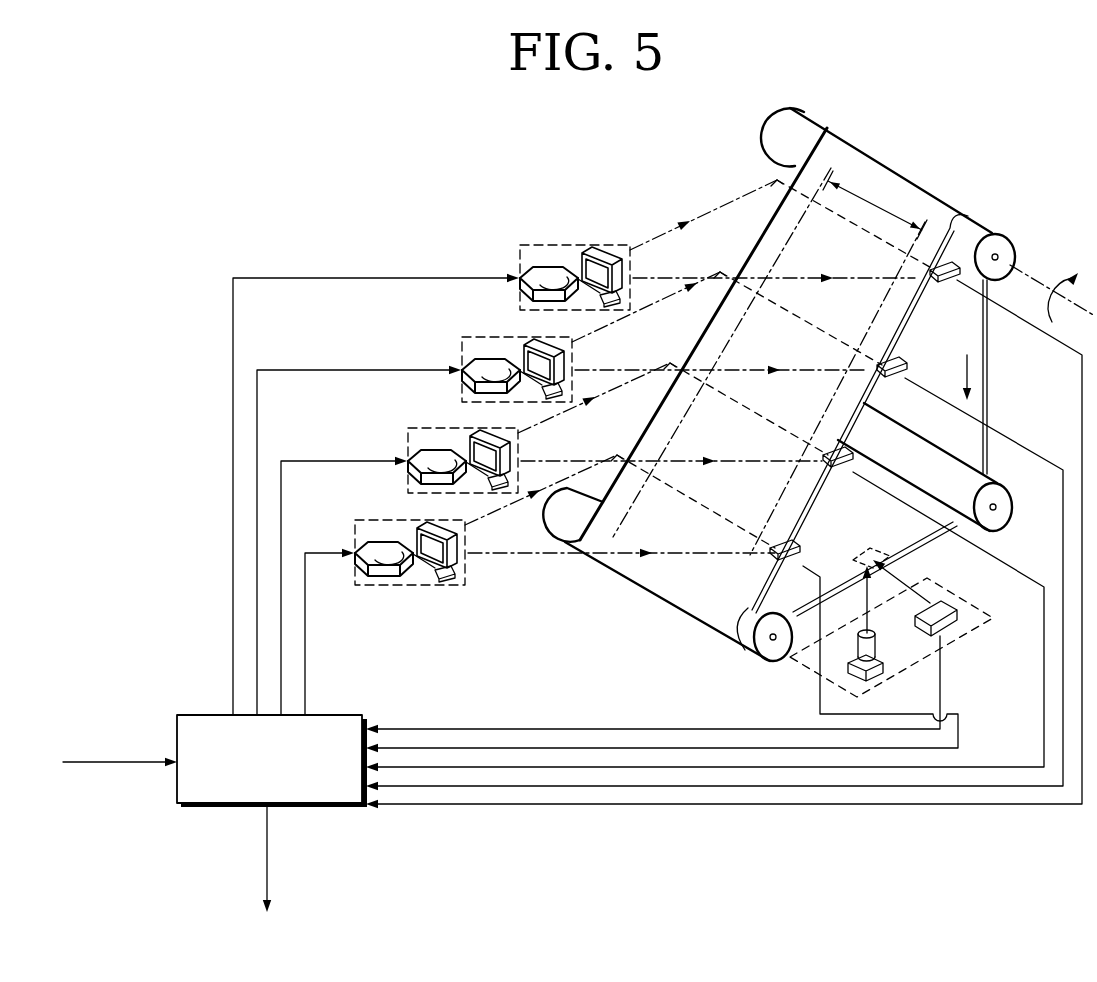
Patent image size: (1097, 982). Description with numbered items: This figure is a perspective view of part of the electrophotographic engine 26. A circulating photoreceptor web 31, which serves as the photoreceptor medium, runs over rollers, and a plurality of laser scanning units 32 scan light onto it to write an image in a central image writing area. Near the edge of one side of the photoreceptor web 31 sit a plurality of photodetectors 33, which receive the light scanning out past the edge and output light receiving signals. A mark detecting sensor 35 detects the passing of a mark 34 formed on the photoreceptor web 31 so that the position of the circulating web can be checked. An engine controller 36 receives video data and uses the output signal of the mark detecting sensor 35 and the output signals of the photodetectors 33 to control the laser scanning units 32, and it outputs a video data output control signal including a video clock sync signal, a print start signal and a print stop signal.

The engine 26 is at (236, 232).
The photoreceptor web 31 is at (975, 343).
The laser scanning unit 32 is at (519, 246).
The photodetector 33 is at (942, 284).
The mark 34 is at (890, 555).
The mark detecting sensor 35 is at (968, 640).
The engine controller 36 is at (336, 714).